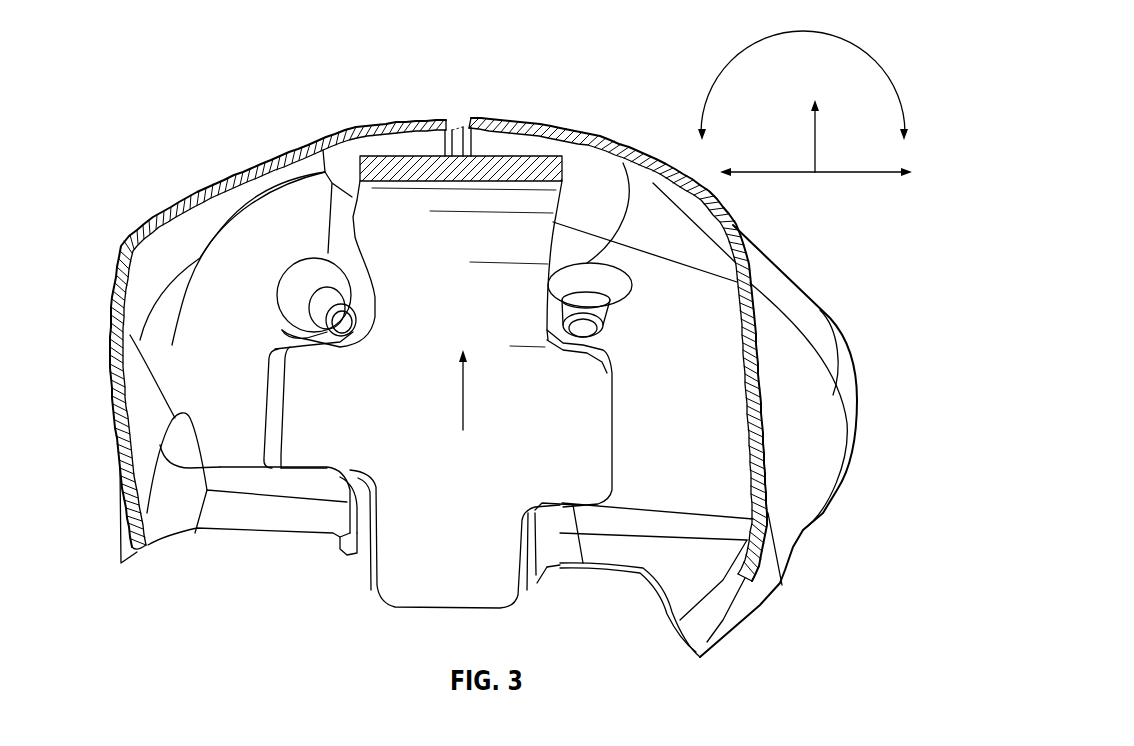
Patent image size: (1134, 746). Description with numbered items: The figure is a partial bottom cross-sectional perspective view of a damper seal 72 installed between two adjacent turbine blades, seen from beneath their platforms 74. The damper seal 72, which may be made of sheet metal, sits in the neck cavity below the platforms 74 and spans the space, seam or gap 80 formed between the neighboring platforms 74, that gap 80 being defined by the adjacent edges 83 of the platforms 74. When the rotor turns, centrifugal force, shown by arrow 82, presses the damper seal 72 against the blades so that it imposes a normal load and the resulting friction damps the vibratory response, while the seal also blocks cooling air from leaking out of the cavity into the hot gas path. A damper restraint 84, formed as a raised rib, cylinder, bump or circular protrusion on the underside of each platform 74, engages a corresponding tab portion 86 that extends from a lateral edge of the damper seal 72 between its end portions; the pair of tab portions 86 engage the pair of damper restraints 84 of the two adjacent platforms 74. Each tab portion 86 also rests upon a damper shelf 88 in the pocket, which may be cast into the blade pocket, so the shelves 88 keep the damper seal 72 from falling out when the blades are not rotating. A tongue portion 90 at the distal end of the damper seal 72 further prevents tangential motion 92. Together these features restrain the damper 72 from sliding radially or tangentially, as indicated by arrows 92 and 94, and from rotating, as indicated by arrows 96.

The damper seal 72 is at (351, 468).
The platform 74 is at (227, 177).
The gap 80 is at (461, 101).
The centrifugal force arrow 82 is at (464, 398).
The adjacent edges 83 is at (448, 118).
The damper restraint 84 is at (343, 322).
The tab portion 86 is at (280, 370).
The damper shelf 88 is at (252, 520).
The tongue portion 90 is at (403, 587).
The tangential motion arrows 92 is at (817, 125).
The radial direction arrows 94 is at (763, 170).
The rotational motion arrows 96 is at (803, 32).